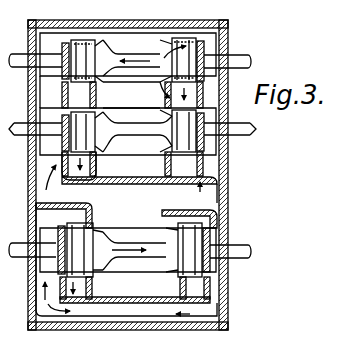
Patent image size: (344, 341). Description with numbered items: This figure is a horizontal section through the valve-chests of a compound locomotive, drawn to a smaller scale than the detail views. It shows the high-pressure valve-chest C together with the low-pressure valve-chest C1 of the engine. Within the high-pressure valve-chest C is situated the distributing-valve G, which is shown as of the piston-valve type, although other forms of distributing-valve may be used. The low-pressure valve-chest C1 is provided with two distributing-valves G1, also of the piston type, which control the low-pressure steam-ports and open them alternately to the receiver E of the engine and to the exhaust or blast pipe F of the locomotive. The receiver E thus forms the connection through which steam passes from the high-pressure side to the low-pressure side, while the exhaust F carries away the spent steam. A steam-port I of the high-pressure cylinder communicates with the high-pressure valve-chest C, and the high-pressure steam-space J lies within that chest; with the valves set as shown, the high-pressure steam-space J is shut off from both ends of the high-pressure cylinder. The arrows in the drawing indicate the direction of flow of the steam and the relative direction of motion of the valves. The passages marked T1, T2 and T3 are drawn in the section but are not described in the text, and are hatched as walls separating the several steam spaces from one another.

The exhaust or blast pipe F is at (128, 54).
The distributing-valve G1 is at (136, 157).
The distributing-valve G is at (80, 250).
The low-pressure valve-chest C1 is at (105, 92).
The passage T3 is at (88, 131).
The passage T2 is at (173, 129).
The passage T1 is at (64, 196).
The steam-port I is at (185, 210).
The receiver E is at (120, 203).
The high-pressure valve-chest C is at (125, 288).
The high-pressure steam-space J is at (126, 259).